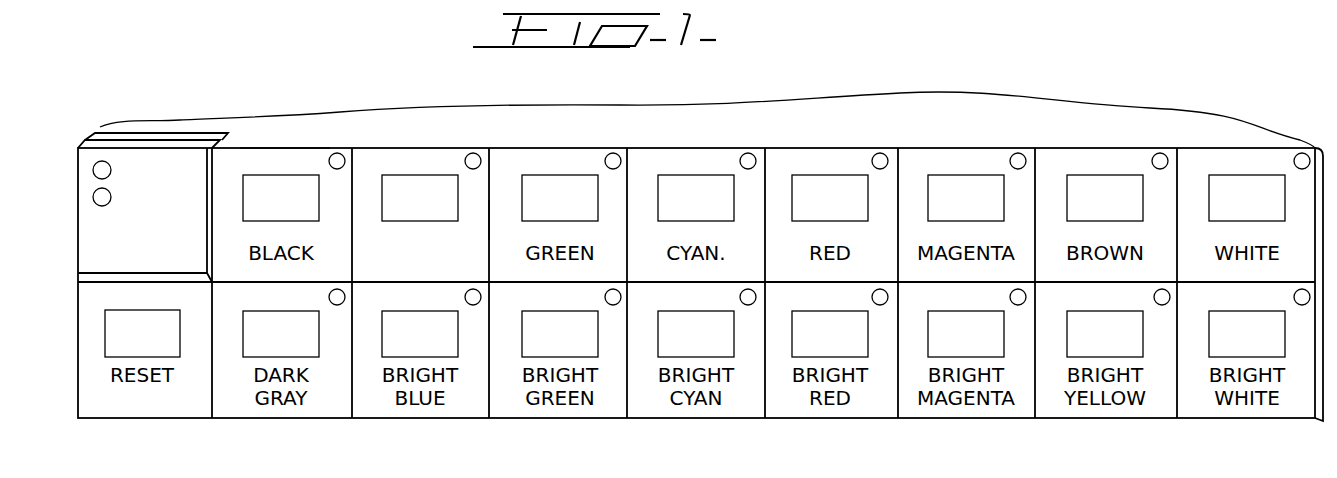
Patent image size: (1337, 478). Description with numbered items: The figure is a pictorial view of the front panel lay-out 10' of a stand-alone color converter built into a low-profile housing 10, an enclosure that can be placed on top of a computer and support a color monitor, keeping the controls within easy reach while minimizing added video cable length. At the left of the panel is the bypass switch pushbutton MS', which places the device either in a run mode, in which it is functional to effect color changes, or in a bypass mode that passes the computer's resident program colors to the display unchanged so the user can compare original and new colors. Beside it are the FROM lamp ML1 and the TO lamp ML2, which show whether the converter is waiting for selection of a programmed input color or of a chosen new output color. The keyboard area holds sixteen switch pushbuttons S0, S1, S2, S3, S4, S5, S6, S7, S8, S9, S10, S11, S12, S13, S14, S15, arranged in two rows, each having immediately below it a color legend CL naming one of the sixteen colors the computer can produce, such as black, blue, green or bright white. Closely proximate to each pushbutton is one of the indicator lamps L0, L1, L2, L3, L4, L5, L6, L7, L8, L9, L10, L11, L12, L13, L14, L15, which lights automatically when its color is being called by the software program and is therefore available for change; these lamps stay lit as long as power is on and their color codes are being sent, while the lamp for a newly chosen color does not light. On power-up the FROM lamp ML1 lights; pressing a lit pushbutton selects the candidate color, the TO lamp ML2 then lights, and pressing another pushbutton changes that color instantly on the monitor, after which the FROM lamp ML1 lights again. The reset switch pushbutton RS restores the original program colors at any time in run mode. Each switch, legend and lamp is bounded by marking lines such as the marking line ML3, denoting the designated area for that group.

The housing 10 is at (700, 302).
The front panel lay-out 10' is at (298, 106).
The bypass switch pushbutton MS' is at (170, 183).
The FROM lamp ML1 is at (102, 161).
The TO lamp ML2 is at (104, 188).
The marking line ML3 is at (489, 222).
The color legend CL is at (446, 257).
The reset switch pushbutton RS is at (142, 333).
The switch pushbutton S0 is at (265, 207).
The switch pushbutton S1 is at (404, 207).
The switch pushbutton S2 is at (544, 207).
The switch pushbutton S3 is at (680, 207).
The switch pushbutton S4 is at (814, 207).
The switch pushbutton S5 is at (950, 207).
The switch pushbutton S6 is at (1089, 207).
The switch pushbutton S7 is at (1231, 207).
The switch pushbutton S8 is at (265, 343).
The switch pushbutton S9 is at (404, 343).
The switch pushbutton S10 is at (540, 343).
The switch pushbutton S11 is at (676, 343).
The switch pushbutton S12 is at (810, 343).
The switch pushbutton S13 is at (946, 343).
The switch pushbutton S14 is at (1085, 343).
The switch pushbutton S15 is at (1227, 343).
The indicator lamp L0 is at (338, 153).
The indicator lamp L1 is at (474, 153).
The indicator lamp L2 is at (614, 153).
The indicator lamp L3 is at (749, 153).
The indicator lamp L4 is at (881, 153).
The indicator lamp L5 is at (1019, 153).
The indicator lamp L6 is at (1161, 153).
The indicator lamp L7 is at (1303, 153).
The indicator lamp L8 is at (327, 296).
The indicator lamp L9 is at (464, 296).
The indicator lamp L10 is at (603, 296).
The indicator lamp L11 is at (738, 296).
The indicator lamp L12 is at (870, 296).
The indicator lamp L13 is at (1008, 296).
The indicator lamp L14 is at (1152, 296).
The indicator lamp L15 is at (1292, 296).